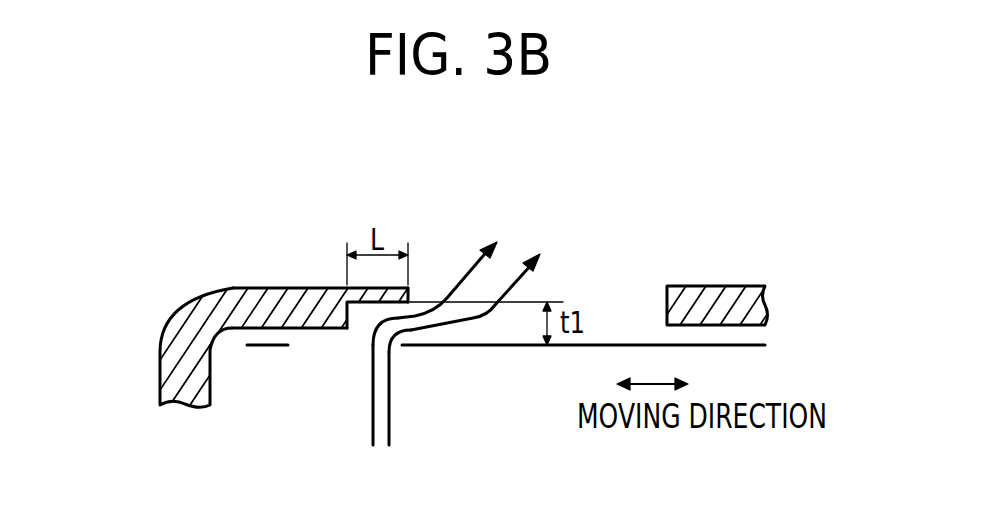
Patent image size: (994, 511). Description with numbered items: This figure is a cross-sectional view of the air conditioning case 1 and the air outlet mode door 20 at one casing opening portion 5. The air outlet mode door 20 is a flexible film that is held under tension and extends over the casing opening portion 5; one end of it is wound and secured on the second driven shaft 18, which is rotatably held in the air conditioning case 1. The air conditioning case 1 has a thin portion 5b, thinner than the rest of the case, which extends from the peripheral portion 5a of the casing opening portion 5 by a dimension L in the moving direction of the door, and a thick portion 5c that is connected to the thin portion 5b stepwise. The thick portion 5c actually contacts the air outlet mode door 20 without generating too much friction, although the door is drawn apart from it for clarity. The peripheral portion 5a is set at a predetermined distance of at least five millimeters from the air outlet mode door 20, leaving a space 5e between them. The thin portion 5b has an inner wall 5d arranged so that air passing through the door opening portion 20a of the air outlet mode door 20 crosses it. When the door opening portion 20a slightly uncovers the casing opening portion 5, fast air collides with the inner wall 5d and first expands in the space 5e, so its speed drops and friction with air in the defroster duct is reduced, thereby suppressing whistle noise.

The air conditioning case 1 is at (158, 300).
The casing opening portion 5 is at (485, 327).
The peripheral portion 5a is at (409, 293).
The thin portion 5b is at (376, 289).
The thick portion 5c is at (252, 290).
The inner wall 5d is at (370, 307).
The space 5e is at (400, 330).
The second driven shaft 18 is at (248, 392).
The air outlet mode door 20 is at (497, 347).
The door opening portion 20a is at (313, 350).